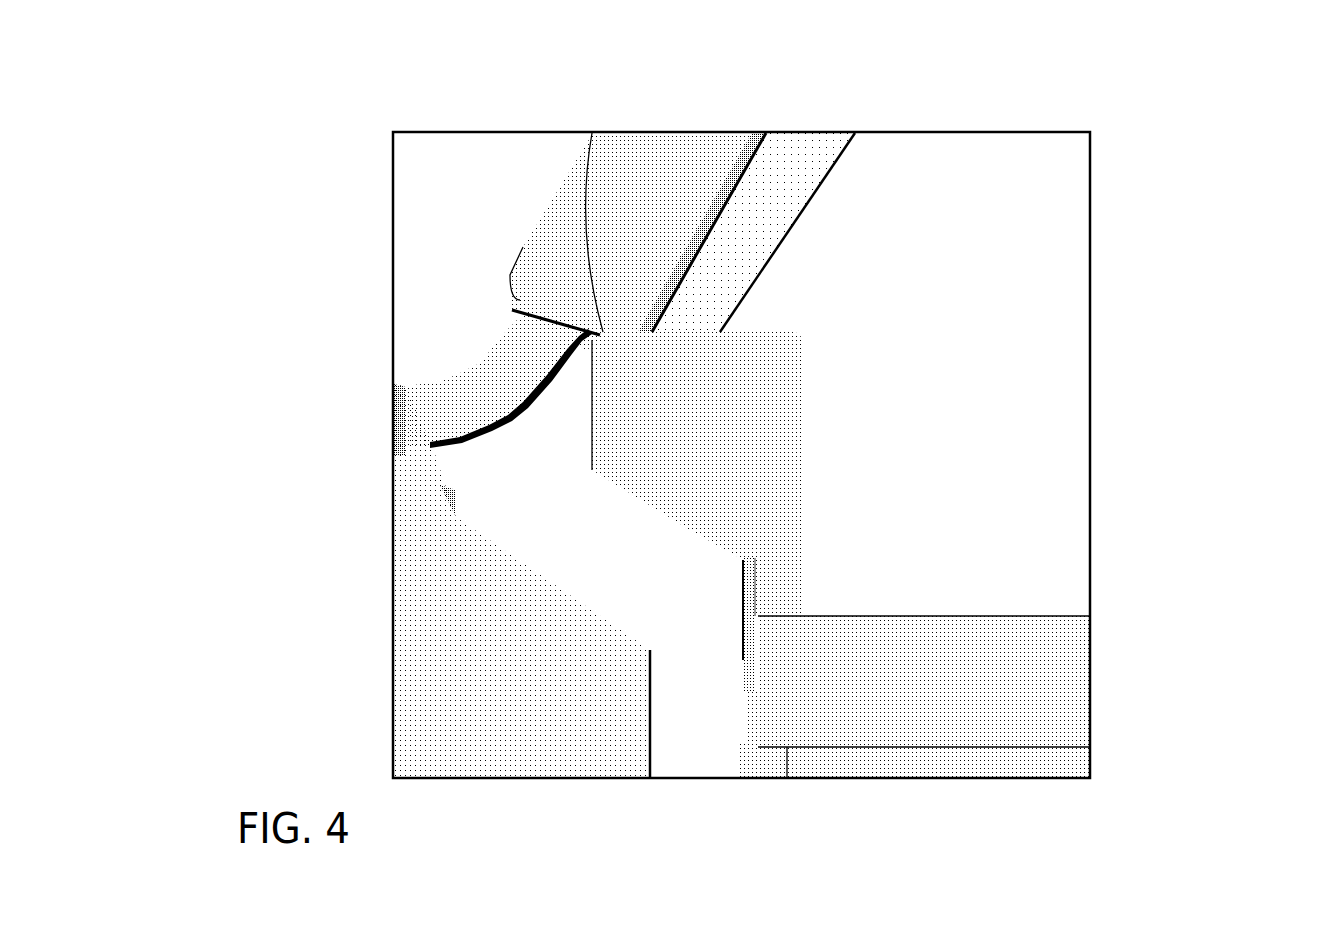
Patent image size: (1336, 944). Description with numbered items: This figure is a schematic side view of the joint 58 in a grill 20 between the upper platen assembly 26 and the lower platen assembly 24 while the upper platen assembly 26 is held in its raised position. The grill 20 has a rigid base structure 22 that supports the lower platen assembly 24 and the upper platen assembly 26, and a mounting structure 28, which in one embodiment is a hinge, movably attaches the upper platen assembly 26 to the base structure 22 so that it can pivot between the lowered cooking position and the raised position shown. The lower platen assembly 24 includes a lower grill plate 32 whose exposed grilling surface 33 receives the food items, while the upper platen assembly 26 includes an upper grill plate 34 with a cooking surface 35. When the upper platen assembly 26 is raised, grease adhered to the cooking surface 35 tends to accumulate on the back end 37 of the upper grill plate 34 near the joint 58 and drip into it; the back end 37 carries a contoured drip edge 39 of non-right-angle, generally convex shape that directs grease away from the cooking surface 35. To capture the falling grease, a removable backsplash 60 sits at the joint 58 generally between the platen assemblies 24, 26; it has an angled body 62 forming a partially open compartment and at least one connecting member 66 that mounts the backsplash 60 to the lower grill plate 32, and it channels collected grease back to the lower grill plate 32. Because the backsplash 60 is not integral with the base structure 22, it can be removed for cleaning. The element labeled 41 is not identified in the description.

The grill 20 is at (1200, 63).
The base structure 22 is at (545, 745).
The lower platen assembly 24 is at (981, 662).
The upper platen assembly 26 is at (750, 177).
The mounting structure 28 is at (523, 317).
The lower grill plate 32 is at (1068, 655).
The grilling surface 33 is at (1053, 617).
The upper grill plate 34 is at (820, 147).
The cooking surface 35 is at (840, 167).
The back end 37 is at (623, 405).
The drip edge 39 is at (640, 423).
The spacer strip 41 is at (762, 625).
The joint 58 is at (640, 572).
The backsplash 60 is at (814, 446).
The angled body 62 is at (713, 446).
The connecting member 66 is at (782, 571).